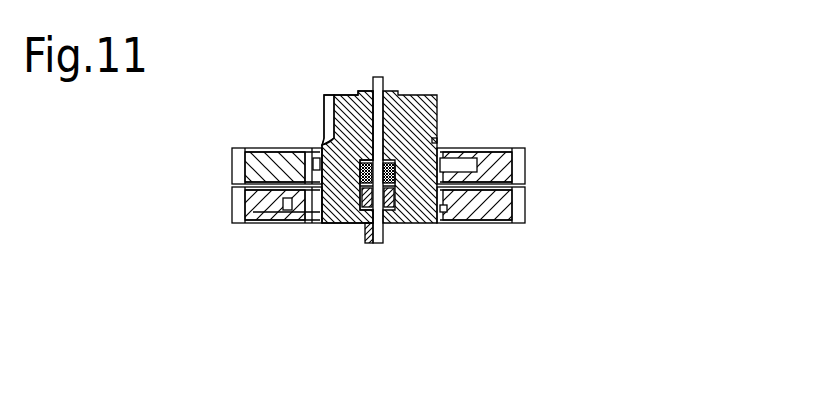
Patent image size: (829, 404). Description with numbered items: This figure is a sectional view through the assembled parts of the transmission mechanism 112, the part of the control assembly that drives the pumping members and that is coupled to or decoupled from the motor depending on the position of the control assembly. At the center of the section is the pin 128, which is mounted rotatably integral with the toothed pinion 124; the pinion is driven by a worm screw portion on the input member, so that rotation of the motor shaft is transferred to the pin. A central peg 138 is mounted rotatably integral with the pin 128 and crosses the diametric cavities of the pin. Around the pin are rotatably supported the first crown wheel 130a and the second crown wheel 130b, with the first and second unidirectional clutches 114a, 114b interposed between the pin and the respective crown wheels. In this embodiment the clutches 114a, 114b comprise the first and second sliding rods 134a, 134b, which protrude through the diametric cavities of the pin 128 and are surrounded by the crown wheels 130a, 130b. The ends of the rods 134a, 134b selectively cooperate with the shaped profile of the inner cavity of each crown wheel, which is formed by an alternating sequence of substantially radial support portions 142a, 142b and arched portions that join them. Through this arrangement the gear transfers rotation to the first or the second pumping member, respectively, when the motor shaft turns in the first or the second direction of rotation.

The transmission mechanism 112 is at (558, 104).
The first unidirectional clutch 114a is at (400, 208).
The second unidirectional clutch 114b is at (401, 163).
The toothed pinion 124 is at (403, 113).
The pin 128 is at (338, 210).
The first crown wheel 130a is at (520, 205).
The second crown wheel 130b is at (238, 162).
The first sliding rod 134a is at (365, 220).
The second sliding rod 134b is at (335, 140).
The central peg 138 is at (368, 72).
The support portion 142a is at (277, 212).
The support portion 142b is at (480, 170).